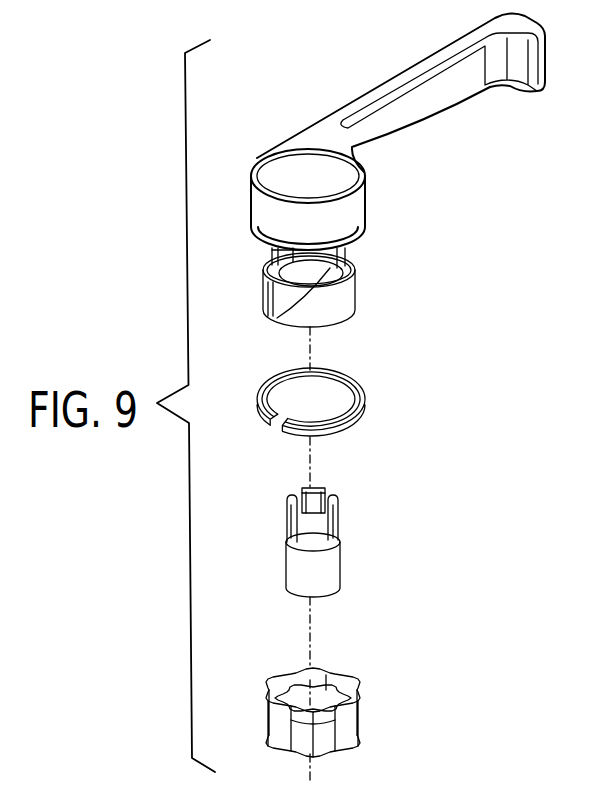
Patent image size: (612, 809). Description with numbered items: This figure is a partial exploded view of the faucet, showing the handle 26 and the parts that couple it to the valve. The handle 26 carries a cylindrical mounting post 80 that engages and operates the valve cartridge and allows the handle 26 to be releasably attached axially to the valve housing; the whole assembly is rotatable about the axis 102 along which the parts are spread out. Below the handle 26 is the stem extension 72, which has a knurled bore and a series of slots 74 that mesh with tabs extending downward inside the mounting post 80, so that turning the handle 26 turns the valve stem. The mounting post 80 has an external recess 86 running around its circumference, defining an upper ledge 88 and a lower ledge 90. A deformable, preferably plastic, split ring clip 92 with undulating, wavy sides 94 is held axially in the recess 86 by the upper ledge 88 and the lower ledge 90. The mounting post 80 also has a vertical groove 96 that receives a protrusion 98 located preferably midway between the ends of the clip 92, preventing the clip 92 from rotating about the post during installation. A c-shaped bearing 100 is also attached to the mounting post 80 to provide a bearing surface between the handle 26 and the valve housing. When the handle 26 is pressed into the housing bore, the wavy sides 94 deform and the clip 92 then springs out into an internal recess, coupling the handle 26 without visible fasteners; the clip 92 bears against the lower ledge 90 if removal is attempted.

The handle 26 is at (397, 64).
The stem extension 72 is at (350, 556).
The slots 74 is at (290, 546).
The cylindrical mounting post 80 is at (350, 322).
The external recess 86 is at (367, 243).
The upper ledge 88 is at (300, 264).
The lower ledge 90 is at (357, 263).
The split ring clip 92 is at (355, 673).
The undulating, wavy sides 94 is at (352, 735).
The vertical groove 96 is at (280, 313).
The protrusion 98 is at (330, 680).
The c-shaped bearing 100 is at (365, 398).
The axis 102 is at (310, 770).